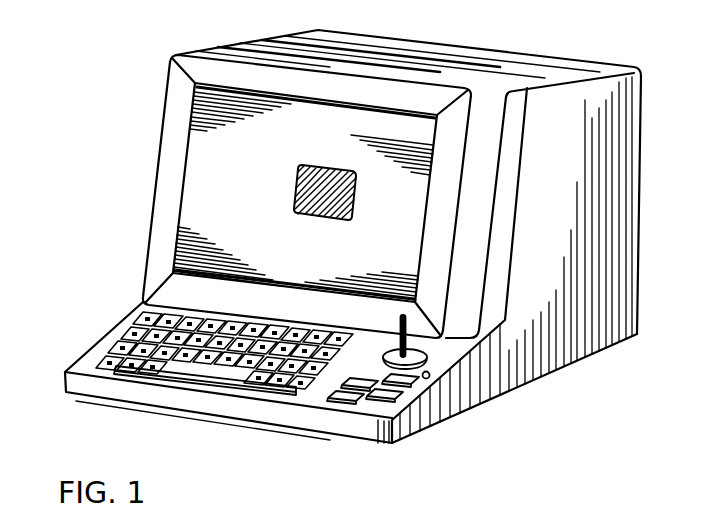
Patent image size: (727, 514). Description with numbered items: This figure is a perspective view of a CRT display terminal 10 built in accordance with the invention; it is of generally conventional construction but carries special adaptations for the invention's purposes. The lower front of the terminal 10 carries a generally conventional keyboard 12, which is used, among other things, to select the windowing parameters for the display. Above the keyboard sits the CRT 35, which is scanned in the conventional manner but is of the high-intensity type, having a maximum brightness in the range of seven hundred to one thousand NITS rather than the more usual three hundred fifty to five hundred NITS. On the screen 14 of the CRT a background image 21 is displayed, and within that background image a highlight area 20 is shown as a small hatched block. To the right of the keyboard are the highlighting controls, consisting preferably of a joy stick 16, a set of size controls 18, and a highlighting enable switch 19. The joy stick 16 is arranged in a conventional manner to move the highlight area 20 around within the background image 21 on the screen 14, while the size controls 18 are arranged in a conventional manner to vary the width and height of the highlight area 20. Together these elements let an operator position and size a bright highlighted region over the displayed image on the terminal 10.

The terminal 10 is at (500, 49).
The keyboard 12 is at (143, 325).
The screen 14 is at (188, 153).
The joy stick 16 is at (401, 318).
The size controls 18 is at (335, 404).
The highlighting enable switch 19 is at (431, 373).
The highlight area 20 is at (297, 184).
The background image 21 is at (207, 180).
The CRT 35 is at (164, 112).